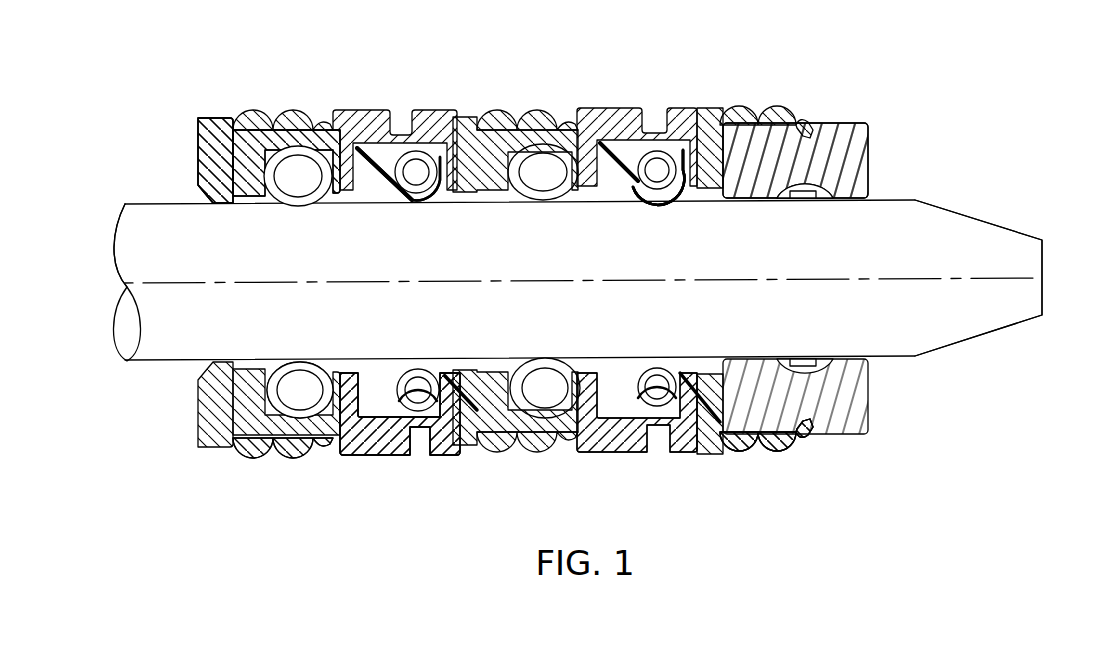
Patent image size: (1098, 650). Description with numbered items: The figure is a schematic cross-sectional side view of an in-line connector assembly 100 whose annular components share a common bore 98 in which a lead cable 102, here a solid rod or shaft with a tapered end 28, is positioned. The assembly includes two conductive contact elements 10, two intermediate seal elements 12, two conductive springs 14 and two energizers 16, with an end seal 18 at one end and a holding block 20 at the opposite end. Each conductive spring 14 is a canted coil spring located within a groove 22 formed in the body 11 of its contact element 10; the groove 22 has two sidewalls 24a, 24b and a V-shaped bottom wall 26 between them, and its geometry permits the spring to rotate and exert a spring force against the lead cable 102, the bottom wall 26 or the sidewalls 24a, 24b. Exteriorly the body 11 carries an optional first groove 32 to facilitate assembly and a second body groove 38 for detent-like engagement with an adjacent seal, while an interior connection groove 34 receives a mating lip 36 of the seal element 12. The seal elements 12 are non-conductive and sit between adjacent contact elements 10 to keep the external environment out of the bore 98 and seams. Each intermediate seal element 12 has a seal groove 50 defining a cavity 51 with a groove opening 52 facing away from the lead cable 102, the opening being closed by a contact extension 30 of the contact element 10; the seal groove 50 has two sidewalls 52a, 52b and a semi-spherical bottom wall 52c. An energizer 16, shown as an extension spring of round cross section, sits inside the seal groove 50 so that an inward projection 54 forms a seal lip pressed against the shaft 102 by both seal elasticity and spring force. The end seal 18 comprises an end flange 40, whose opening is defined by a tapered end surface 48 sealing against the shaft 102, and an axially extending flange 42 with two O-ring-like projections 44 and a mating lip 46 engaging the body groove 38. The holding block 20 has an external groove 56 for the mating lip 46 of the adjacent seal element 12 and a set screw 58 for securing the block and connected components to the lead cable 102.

The in-line connector assembly 100 is at (183, 72).
The conductive contact element 10 is at (357, 100).
The body 11 is at (537, 447).
The seal element 12 is at (494, 95).
The conductive spring 14 is at (282, 362).
The energizer 16 is at (410, 203).
The end seal 18 is at (190, 151).
The holding block 20 is at (869, 112).
The groove 22 is at (543, 192).
The sidewall 24a is at (257, 198).
The sidewall 24b is at (343, 192).
The bottom wall 26 is at (300, 165).
The tapered end 28 is at (980, 236).
The contact extension 30 is at (448, 457).
The first groove 32 is at (418, 430).
The connection groove 34 is at (372, 418).
The mating lip 36 is at (612, 416).
The body groove 38 is at (542, 132).
The end flange 40 is at (200, 415).
The axially extending flange 42 is at (782, 457).
The projection 44 is at (258, 462).
The mating lip 46 is at (328, 447).
The tapered end surface 48 is at (200, 190).
The seal groove 50 is at (410, 386).
The cavity 51 is at (396, 150).
The groove opening 52 is at (641, 150).
The sidewall 52a is at (627, 175).
The sidewall 52b is at (701, 180).
The bottom wall 52c is at (657, 196).
The inward projection 54 is at (437, 193).
The external groove 56 is at (817, 432).
The set screw 58 is at (818, 199).
The bore 98 is at (210, 298).
The lead cable 102 is at (898, 341).